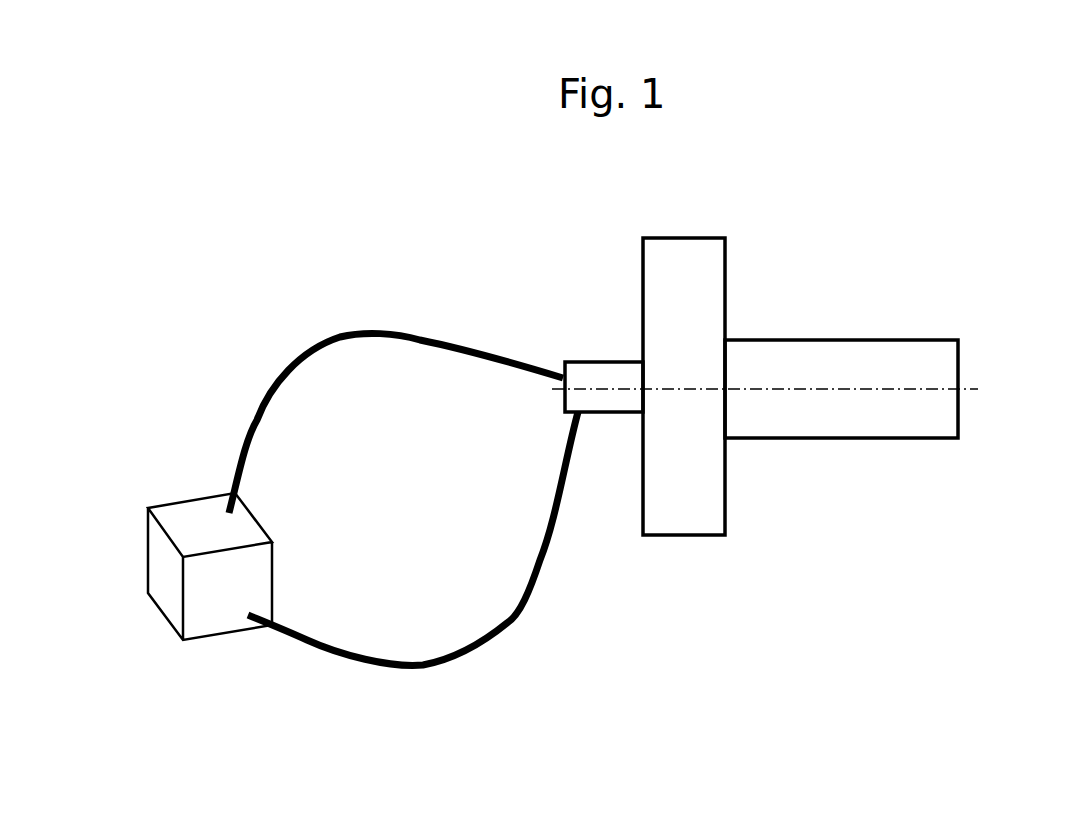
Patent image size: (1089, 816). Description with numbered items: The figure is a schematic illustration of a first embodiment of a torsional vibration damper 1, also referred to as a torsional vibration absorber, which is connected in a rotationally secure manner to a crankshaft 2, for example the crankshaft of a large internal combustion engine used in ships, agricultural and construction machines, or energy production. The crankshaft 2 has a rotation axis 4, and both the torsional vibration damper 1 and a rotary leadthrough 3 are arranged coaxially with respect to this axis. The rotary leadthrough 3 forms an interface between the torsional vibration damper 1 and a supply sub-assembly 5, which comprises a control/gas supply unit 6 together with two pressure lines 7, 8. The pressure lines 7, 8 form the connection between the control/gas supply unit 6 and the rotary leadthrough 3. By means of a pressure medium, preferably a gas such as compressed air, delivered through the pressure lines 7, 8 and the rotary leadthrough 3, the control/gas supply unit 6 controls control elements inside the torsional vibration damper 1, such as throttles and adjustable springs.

The torsional vibration damper 1 is at (683, 228).
The crankshaft 2 is at (813, 363).
The rotary leadthrough 3 is at (598, 375).
The rotation axis 4 is at (974, 388).
The supply sub-assembly 5 is at (282, 302).
The control/gas supply unit 6 is at (174, 490).
The pressure line 7 is at (401, 333).
The pressure line 8 is at (505, 635).